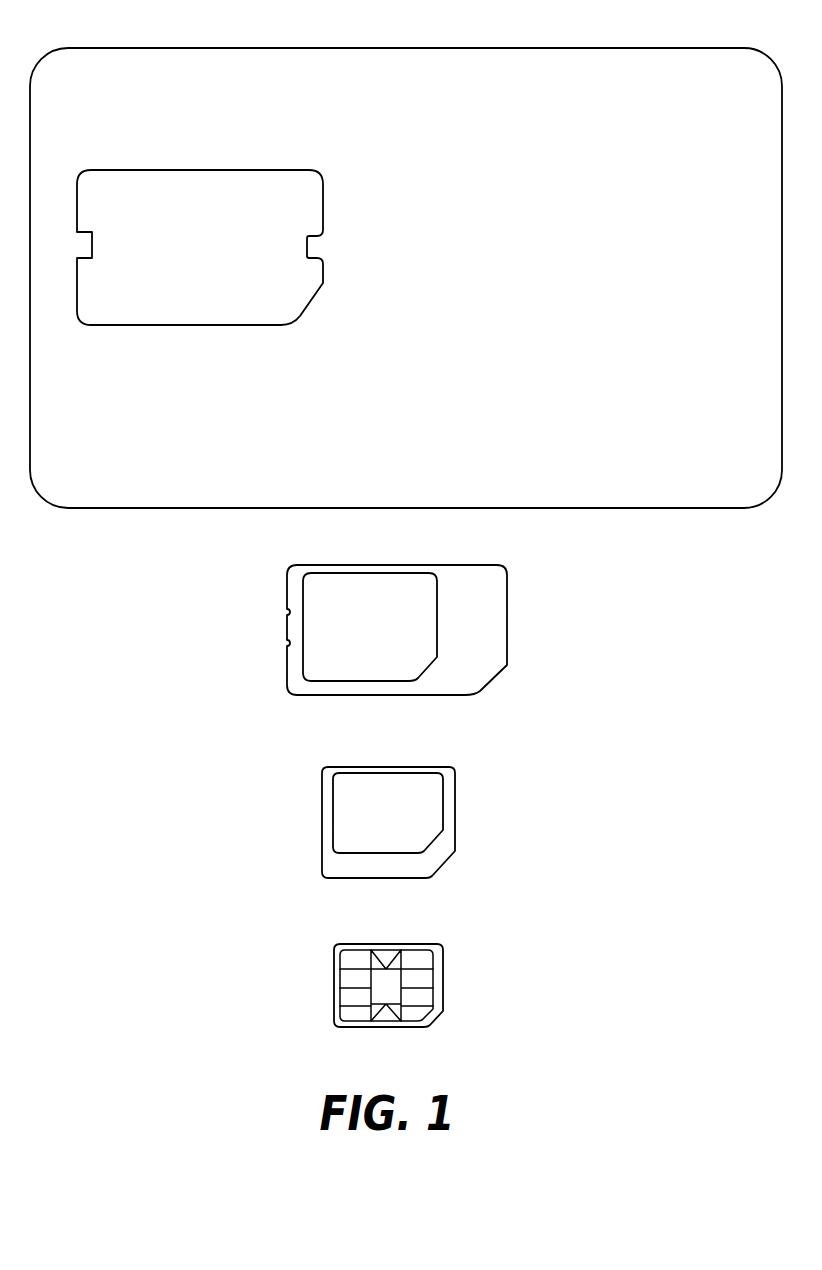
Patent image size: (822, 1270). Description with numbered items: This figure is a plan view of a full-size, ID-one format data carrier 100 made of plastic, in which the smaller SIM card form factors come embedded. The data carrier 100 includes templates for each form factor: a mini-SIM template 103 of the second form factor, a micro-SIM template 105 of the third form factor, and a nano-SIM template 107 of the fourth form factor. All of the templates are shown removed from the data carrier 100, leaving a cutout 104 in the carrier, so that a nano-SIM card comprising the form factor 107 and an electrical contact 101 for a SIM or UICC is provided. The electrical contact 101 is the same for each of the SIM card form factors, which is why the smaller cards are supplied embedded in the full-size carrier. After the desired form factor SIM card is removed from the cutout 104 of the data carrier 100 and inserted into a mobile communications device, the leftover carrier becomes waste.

The data carrier 100 is at (683, 510).
The electrical contact 101 is at (437, 978).
The mini-SIM form factor template 103 is at (507, 613).
The cutout 104 is at (177, 170).
The micro-SIM form factor template 105 is at (455, 797).
The nano-SIM form factor 107 is at (334, 977).